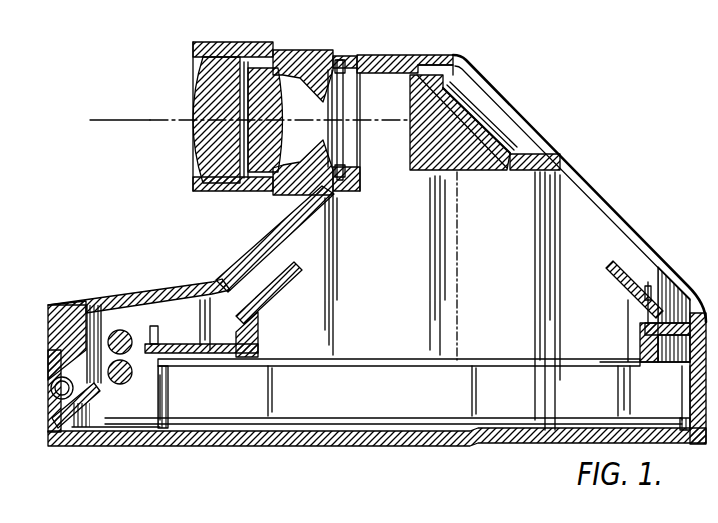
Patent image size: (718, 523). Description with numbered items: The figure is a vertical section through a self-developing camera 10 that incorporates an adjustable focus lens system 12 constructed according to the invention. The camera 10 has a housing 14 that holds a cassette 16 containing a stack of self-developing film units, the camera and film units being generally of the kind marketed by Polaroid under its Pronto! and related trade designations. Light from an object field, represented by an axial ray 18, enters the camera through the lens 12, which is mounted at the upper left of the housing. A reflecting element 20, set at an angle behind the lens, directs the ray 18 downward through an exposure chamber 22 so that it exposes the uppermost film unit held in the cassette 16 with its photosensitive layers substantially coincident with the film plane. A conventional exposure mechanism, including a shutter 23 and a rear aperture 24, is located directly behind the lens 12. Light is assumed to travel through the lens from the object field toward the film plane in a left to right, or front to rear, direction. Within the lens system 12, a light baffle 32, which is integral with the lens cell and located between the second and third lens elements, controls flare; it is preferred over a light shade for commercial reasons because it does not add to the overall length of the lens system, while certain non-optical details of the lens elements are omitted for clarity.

The self-developing camera 10 is at (598, 131).
The adjustable focus lens system 12 is at (309, 98).
The housing 14 is at (610, 219).
The cassette 16 is at (480, 360).
The axial ray 18 is at (125, 119).
The reflecting element 20 is at (443, 84).
The exposure chamber 22 is at (390, 262).
The shutter 23 is at (343, 106).
The rear aperture 24 is at (312, 62).
The light baffle 32 is at (278, 62).